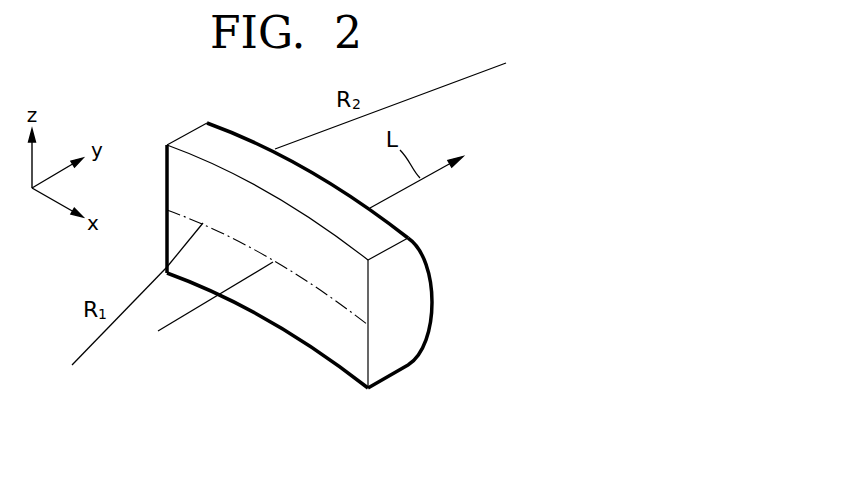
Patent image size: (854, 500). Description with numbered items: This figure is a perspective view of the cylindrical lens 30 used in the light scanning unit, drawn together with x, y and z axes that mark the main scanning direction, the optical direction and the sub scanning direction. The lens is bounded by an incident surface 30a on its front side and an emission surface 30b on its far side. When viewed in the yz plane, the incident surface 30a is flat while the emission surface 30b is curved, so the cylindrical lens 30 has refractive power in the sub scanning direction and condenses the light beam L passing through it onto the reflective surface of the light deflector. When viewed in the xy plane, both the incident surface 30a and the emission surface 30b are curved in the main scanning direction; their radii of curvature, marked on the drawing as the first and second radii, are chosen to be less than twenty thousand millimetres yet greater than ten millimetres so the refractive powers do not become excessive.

The cylindrical lens 30 is at (329, 293).
The incident surface 30a is at (330, 340).
The emission surface 30b is at (432, 312).